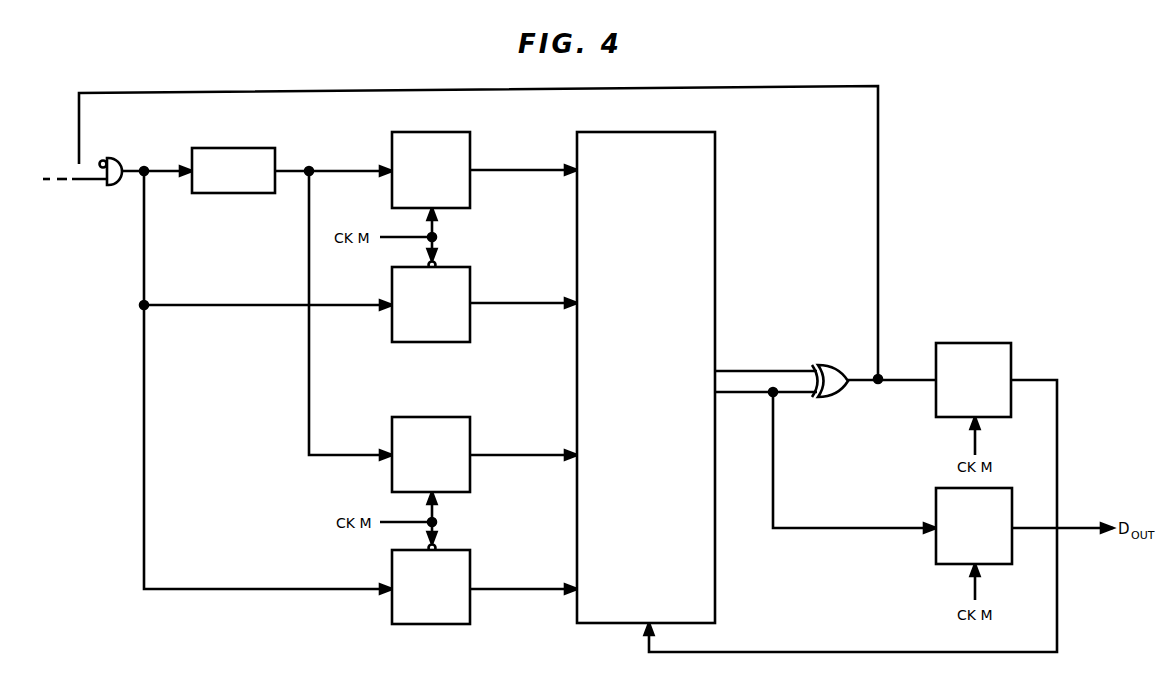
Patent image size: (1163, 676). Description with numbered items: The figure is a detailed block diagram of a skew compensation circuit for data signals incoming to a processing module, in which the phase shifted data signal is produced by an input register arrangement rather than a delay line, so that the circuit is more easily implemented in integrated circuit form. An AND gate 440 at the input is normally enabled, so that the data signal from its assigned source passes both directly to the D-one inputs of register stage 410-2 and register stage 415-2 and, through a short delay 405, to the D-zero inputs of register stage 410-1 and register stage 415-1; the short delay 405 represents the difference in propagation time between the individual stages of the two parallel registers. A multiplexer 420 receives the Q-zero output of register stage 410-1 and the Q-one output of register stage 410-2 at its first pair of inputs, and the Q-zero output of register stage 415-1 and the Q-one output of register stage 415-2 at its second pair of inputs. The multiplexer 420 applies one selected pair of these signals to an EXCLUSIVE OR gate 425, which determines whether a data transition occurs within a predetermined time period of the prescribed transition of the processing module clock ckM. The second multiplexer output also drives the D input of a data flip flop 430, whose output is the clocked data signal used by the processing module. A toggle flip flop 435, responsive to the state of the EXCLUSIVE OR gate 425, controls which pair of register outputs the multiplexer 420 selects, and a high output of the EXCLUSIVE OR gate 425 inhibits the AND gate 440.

The short delay 405 is at (231, 148).
The register stage 410-1 is at (445, 132).
The register stage 410-2 is at (449, 342).
The register stage 415-1 is at (447, 417).
The register stage 415-2 is at (451, 624).
The multiplexer 420 is at (616, 132).
The EXCLUSIVE OR gate 425 is at (848, 344).
The data flip flop 430 is at (936, 500).
The toggle flip flop 435 is at (969, 322).
The AND gate 440 is at (127, 129).